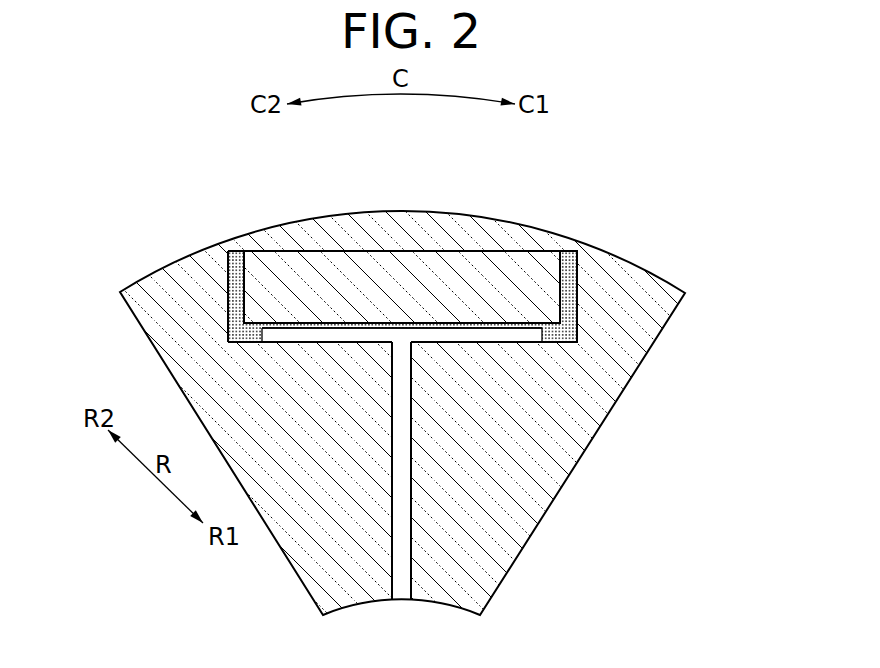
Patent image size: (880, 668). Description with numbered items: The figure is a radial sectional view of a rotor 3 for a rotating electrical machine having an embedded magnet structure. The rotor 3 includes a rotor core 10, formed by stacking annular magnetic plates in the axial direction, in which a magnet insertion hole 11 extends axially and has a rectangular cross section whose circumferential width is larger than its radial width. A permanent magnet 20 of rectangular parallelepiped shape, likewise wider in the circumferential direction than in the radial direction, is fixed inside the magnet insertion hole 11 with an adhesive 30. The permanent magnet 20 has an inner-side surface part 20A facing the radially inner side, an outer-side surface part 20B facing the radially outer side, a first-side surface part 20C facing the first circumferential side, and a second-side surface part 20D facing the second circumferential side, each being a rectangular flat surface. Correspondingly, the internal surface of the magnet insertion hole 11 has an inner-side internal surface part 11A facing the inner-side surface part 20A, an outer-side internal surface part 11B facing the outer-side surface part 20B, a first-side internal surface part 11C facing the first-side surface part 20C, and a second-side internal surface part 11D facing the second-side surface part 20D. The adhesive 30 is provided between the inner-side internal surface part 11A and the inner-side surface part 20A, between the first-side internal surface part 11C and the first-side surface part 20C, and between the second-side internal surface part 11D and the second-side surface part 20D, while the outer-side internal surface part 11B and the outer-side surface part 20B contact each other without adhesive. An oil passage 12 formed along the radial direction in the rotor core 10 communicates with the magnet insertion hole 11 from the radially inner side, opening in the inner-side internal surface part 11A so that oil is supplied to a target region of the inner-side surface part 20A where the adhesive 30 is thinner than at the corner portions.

The rotor 3 is at (688, 253).
The rotor core 10 is at (528, 523).
The magnet insertion hole 11 is at (487, 252).
The inner-side internal surface part 11A is at (297, 350).
The outer-side internal surface part 11B is at (413, 250).
The first-side internal surface part 11C is at (568, 287).
The second-side internal surface part 11D is at (240, 275).
The oil passage 12 is at (400, 598).
The permanent magnet 20 is at (267, 255).
The inner-side surface part 20A is at (493, 330).
The outer-side surface part 20B is at (340, 251).
The first-side surface part 20C is at (565, 268).
The second-side surface part 20D is at (240, 300).
The adhesive 30 is at (248, 340).